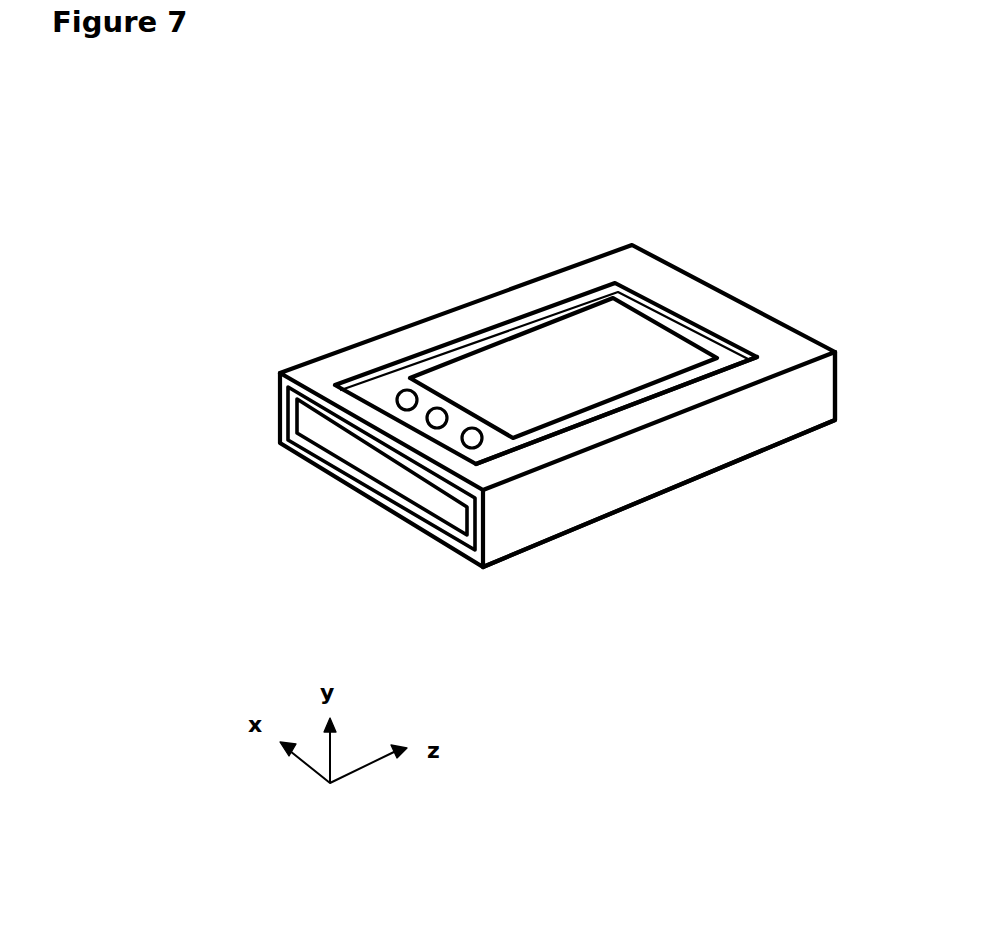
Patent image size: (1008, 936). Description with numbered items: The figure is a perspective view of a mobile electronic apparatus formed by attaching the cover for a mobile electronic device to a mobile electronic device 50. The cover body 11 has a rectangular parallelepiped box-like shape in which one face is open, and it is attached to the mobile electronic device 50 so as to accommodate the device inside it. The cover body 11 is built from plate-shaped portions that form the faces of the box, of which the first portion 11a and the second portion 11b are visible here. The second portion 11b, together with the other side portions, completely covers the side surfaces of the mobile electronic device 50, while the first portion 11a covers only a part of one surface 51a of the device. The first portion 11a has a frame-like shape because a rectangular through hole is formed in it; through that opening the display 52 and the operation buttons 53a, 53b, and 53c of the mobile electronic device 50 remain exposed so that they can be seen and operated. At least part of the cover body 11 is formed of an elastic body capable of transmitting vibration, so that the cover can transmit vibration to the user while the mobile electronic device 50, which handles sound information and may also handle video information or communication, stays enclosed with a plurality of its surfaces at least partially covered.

The cover body 11 is at (638, 275).
The first portion 11a is at (322, 381).
The second portion 11b is at (710, 452).
The mobile electronic device 50 is at (378, 393).
The surface 51a is at (498, 445).
The display 52 is at (567, 352).
The operation button 53a is at (398, 405).
The operation button 53b is at (427, 424).
The operation button 53c is at (461, 445).